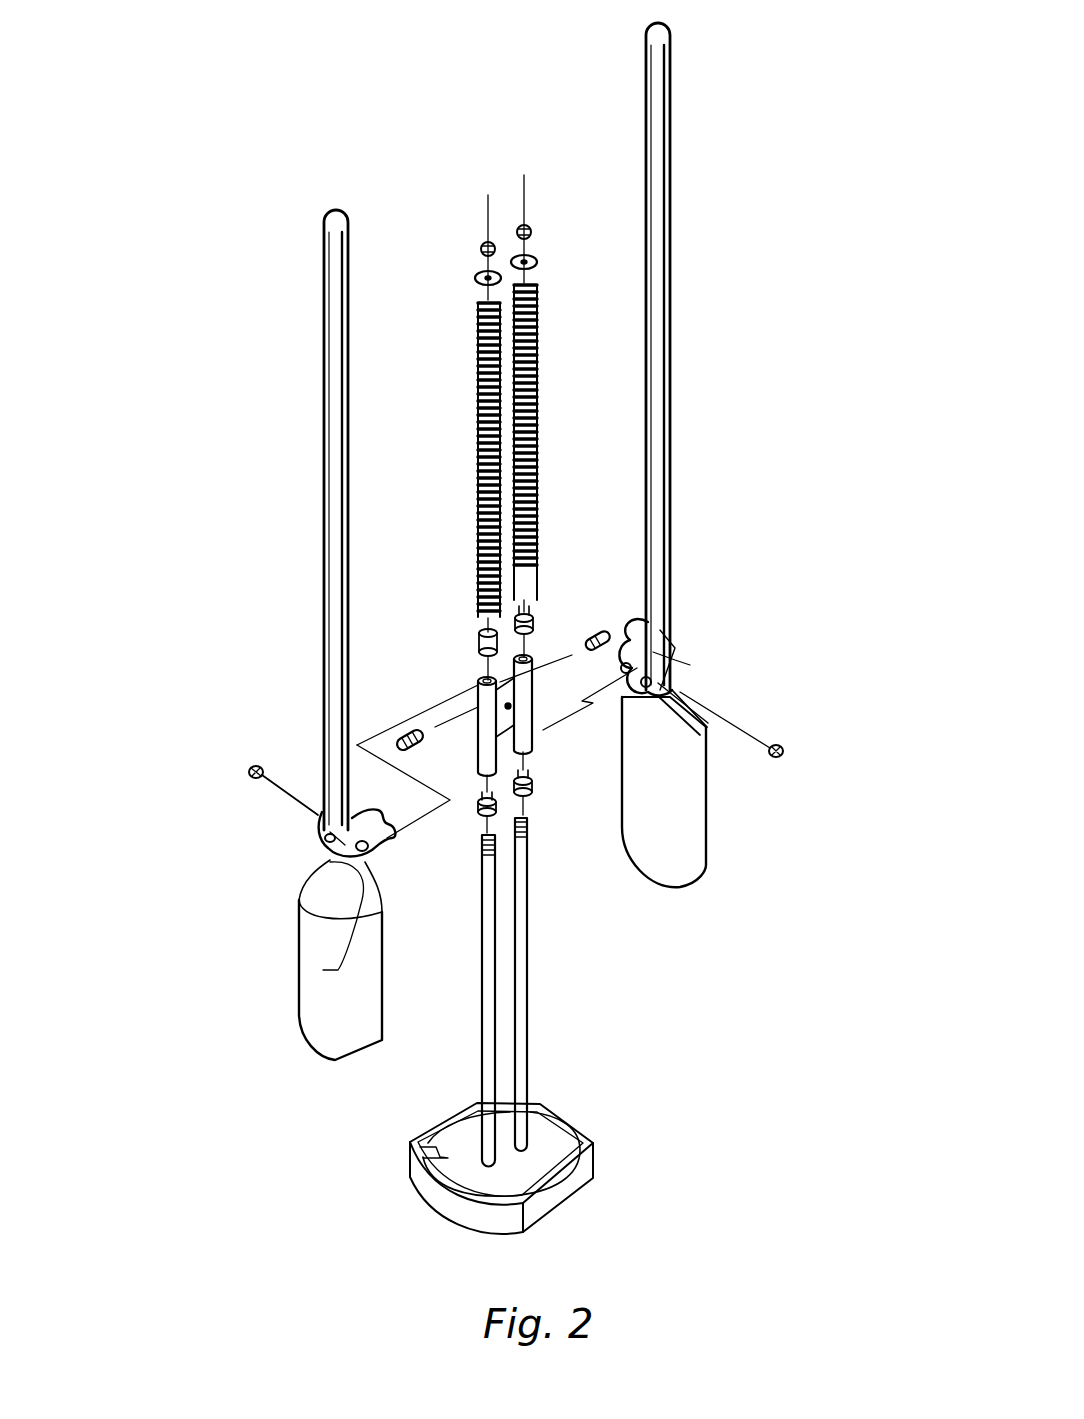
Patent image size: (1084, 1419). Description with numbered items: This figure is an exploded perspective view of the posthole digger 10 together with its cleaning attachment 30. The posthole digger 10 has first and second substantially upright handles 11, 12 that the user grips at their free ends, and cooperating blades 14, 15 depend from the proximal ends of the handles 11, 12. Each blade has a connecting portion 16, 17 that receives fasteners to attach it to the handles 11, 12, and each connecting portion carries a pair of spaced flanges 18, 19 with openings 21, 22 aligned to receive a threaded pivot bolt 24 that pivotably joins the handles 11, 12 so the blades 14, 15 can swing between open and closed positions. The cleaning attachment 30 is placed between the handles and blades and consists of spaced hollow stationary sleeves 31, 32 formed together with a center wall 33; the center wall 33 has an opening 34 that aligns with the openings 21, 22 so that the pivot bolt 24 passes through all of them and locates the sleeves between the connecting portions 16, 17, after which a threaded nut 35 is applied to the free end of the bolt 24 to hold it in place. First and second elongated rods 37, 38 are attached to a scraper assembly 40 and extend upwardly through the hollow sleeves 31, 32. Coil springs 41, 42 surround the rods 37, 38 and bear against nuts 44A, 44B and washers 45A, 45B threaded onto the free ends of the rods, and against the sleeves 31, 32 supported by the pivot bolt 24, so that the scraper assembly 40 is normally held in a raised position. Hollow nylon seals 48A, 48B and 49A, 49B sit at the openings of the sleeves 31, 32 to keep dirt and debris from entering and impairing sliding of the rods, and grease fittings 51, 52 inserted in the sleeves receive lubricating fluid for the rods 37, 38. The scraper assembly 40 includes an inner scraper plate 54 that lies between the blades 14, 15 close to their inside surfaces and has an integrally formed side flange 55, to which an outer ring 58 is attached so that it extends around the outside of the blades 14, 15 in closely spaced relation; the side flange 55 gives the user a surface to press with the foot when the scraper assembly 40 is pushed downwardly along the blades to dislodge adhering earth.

The posthole digger 10 is at (300, 1165).
The first handle 11 is at (323, 548).
The second handle 12 is at (663, 425).
The first blade 14 is at (350, 1038).
The second blade 15 is at (666, 835).
The connecting portion of first blade 16 is at (323, 970).
The connecting portion of second blade 17 is at (672, 672).
The spaced flanges of first connecting portion 18 is at (325, 818).
The spaced flanges of second connecting portion 19 is at (660, 660).
The openings of first flanges 21 is at (328, 842).
The openings of second flanges 22 is at (650, 700).
The threaded pivot bolt 24 is at (784, 762).
The cleaning attachment 30 is at (483, 90).
The first stationary sleeve 31 is at (482, 692).
The second stationary sleeve 32 is at (528, 700).
The center wall 33 is at (520, 738).
The opening of center wall 34 is at (483, 720).
The threaded nut 35 is at (253, 766).
The first elongated rod 37 is at (482, 962).
The second elongated rod 38 is at (520, 905).
The scraper assembly 40 is at (578, 1230).
The first coil spring 41 is at (477, 405).
The second coil spring 42 is at (538, 410).
The first nut 44A is at (482, 244).
The second nut 44B is at (530, 228).
The first washer 45A is at (475, 278).
The second washer 45B is at (537, 260).
The upper nylon seal of first sleeve 48A is at (480, 640).
The lower nylon seal of first sleeve 48B is at (485, 818).
The upper nylon seal of second sleeve 49A is at (533, 618).
The lower nylon seal of second sleeve 49B is at (530, 795).
The first grease fitting 51 is at (410, 735).
The second grease fitting 52 is at (585, 627).
The inner scraper plate 54 is at (530, 1178).
The side flange 55 is at (400, 1170).
The outer ring 58 is at (468, 1198).